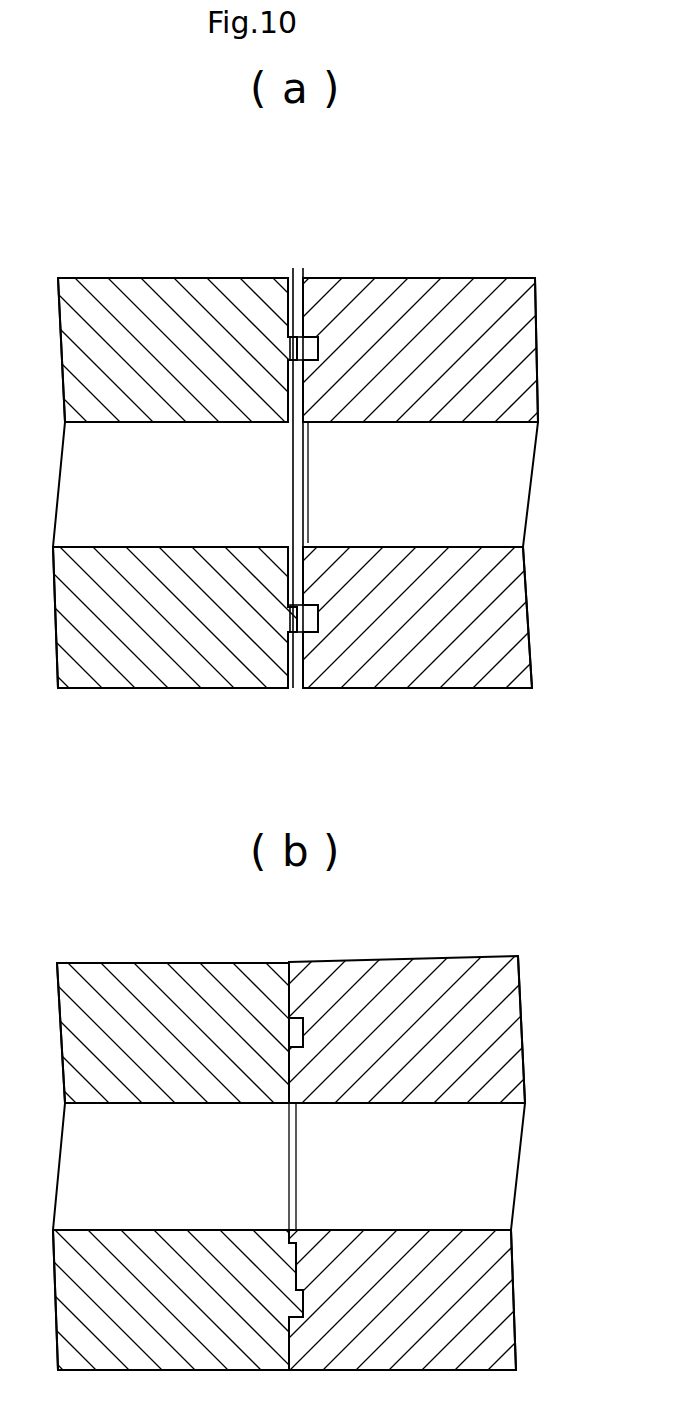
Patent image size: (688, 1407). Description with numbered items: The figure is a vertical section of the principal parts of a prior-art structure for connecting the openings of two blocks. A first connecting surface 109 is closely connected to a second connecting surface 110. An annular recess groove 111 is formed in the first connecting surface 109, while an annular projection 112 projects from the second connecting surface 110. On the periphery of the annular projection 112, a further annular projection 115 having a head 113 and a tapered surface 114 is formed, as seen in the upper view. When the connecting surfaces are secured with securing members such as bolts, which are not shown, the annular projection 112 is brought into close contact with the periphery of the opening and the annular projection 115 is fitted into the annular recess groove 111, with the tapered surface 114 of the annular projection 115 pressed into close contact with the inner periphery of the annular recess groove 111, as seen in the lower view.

The first connecting surface 109 is at (293, 690).
The second connecting surface 110 is at (293, 262).
The annular recess groove 111 is at (313, 320).
The annular projection 112 is at (285, 400).
The head 113 is at (305, 338).
The tapered surface 114 is at (290, 432).
The annular projection 115 is at (290, 343).